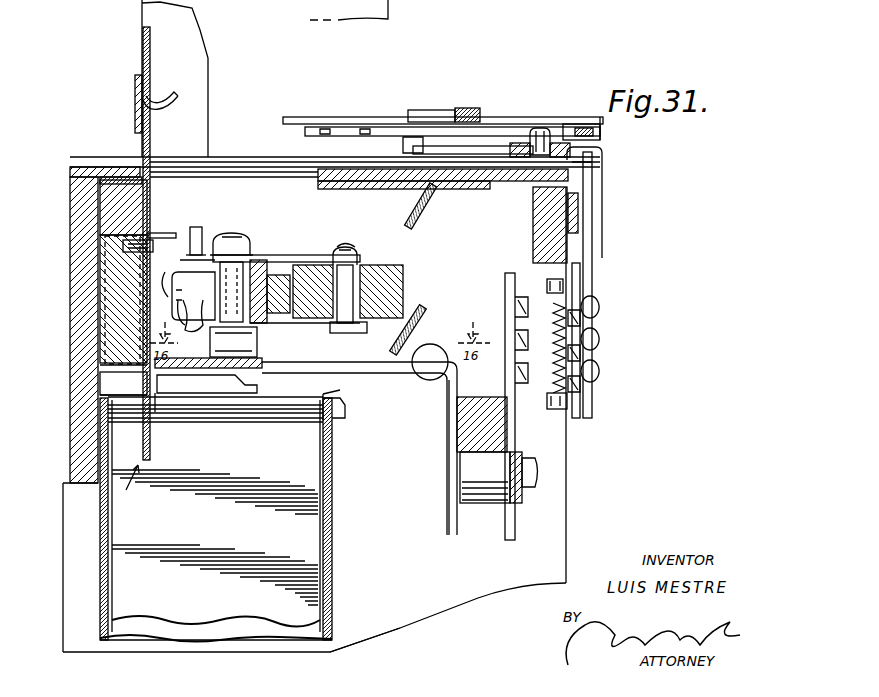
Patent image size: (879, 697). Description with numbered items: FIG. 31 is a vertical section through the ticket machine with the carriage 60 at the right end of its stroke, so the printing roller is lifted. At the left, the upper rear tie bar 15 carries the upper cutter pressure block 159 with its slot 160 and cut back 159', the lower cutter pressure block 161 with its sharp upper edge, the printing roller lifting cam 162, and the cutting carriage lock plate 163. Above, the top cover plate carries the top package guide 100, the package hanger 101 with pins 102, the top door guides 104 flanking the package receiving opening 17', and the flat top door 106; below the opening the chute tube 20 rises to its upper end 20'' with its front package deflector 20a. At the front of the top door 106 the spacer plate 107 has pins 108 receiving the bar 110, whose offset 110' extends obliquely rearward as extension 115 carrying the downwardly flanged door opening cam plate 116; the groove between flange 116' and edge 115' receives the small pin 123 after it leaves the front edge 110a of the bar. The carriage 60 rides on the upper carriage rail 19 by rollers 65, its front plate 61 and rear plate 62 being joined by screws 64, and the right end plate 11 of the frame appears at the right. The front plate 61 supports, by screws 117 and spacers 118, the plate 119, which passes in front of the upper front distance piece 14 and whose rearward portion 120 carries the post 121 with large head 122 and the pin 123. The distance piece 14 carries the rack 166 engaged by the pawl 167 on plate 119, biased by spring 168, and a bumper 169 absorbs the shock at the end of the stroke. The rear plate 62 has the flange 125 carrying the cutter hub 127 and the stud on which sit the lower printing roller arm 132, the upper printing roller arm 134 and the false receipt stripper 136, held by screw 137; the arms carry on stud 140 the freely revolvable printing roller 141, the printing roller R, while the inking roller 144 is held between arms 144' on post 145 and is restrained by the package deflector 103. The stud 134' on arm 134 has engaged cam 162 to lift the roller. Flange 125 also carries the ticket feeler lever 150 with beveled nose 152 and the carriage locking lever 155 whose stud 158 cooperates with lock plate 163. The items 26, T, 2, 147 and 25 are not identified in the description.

The top package guide 100 is at (190, 62).
The package hanger 101 is at (135, 85).
The pins 102 is at (178, 97).
The top door guides 104 is at (92, 157).
The package receiving opening 17' is at (234, 150).
The top door 106 is at (315, 170).
The upper rear distance bar 15 is at (75, 214).
The upper cutter pressure block 159 is at (82, 207).
The slot 160 is at (123, 246).
The cut back 159' is at (79, 300).
The lower cutter pressure block 161 is at (110, 318).
The cutting carriage lock plate 163 is at (148, 382).
The rod 26 is at (198, 420).
The rod end T is at (128, 488).
The printing roller lifting cam 162 is at (161, 229).
The false receipt stripper 136 is at (195, 227).
The stud 134' is at (219, 221).
The screw 137 is at (245, 233).
The upper printing roller arm 134 is at (286, 241).
The stud 140 is at (270, 312).
The lower printing roller arm 132 is at (286, 320).
The inking roller 144 is at (393, 290).
The inking roller arms 144' is at (383, 251).
The post 145 is at (360, 311).
The hub 127 is at (233, 342).
The lever 2 is at (193, 296).
The printing roller R is at (159, 273).
The printing roller 141 is at (167, 312).
The clip 147 is at (192, 328).
The stud 158 is at (208, 375).
The small pin 123 is at (420, 165).
The package deflector 103 is at (428, 222).
The upper front distance piece 14 is at (533, 205).
The door opening cam plate 116 is at (443, 107).
The oblique extension 115 is at (452, 113).
The rearward portion 120 is at (413, 149).
The post 121 is at (443, 112).
The large head 122 is at (462, 110).
The offset 110' is at (509, 122).
The pins 108 is at (540, 130).
The bar 110 is at (572, 122).
The edge 115' is at (595, 119).
The flange 116' is at (621, 125).
The front edge 110a is at (594, 152).
The spacer plate 107 is at (593, 170).
The rack 166 is at (580, 201).
The plate 119 is at (587, 217).
The pawl 167 is at (580, 247).
The screws 117 is at (599, 384).
The bumper 169 is at (517, 338).
The spacers 118 is at (516, 372).
The spring 168 is at (546, 400).
The upper carriage rail 19 is at (493, 382).
The flange 125 is at (418, 341).
The carriage 60 is at (392, 390).
The package deflector 20a is at (350, 393).
The rear plate 62 is at (450, 412).
The screws 64 is at (536, 487).
The rollers 65 is at (490, 500).
The front plate 61 is at (515, 522).
The right end plate 11 is at (437, 598).
The tube 20 is at (236, 518).
The liquid 25 is at (352, 556).
The beveled nose 152 is at (160, 393).
The carriage locking lever 155 is at (227, 392).
The ticket feeler lever 150 is at (253, 392).
The upper end 20'' is at (294, 422).